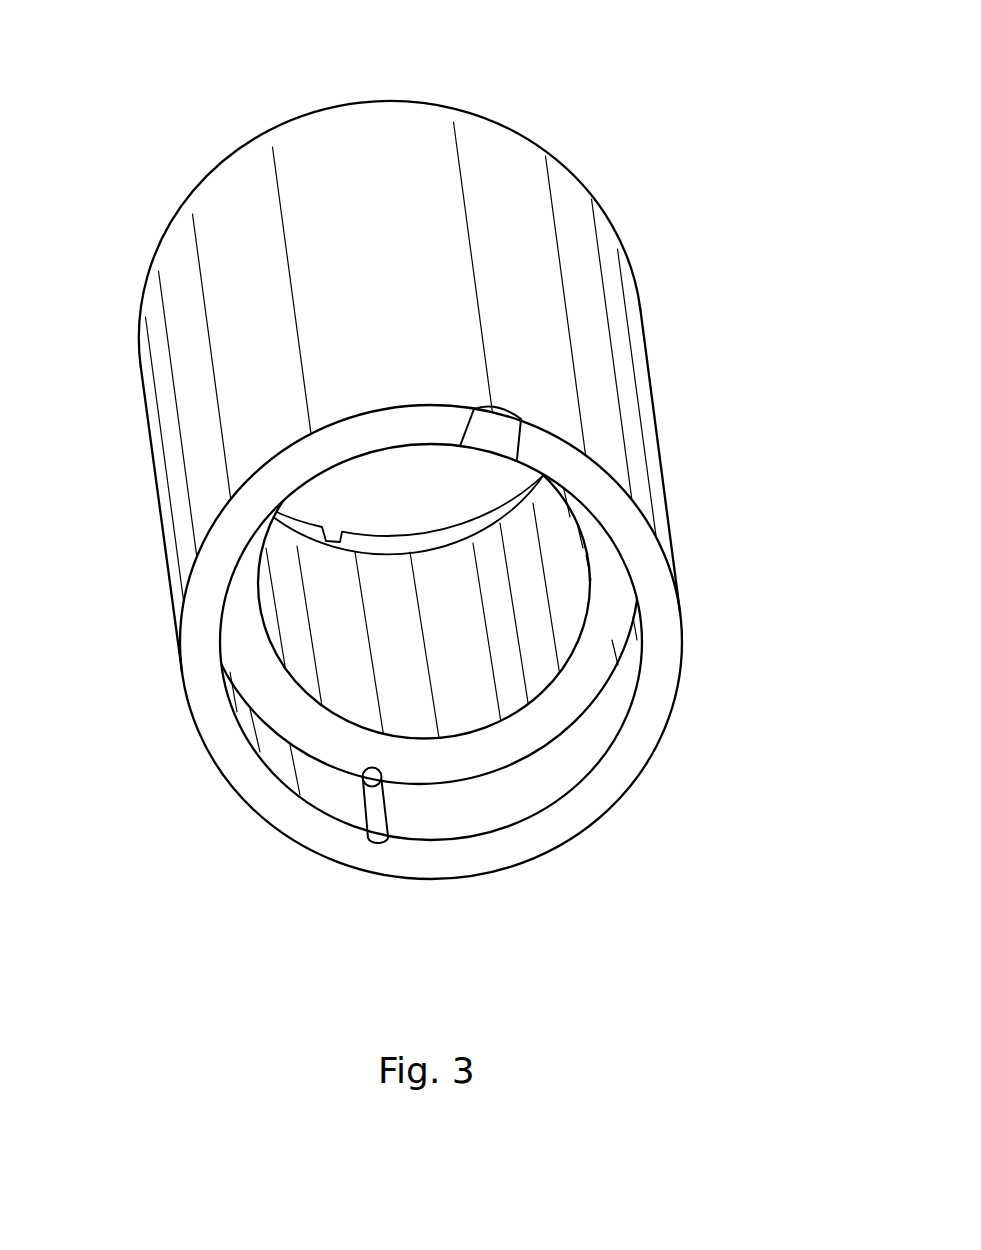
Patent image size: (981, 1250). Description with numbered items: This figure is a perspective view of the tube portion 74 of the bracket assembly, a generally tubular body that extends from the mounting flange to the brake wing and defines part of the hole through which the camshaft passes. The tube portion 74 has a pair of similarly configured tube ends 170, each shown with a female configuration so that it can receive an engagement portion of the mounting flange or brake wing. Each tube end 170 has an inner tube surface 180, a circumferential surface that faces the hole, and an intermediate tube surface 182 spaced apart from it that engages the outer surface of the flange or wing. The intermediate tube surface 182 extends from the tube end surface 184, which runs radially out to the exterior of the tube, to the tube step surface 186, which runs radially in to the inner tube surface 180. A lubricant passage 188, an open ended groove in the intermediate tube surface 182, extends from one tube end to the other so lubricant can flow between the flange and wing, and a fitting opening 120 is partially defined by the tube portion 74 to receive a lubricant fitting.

The tube portion 74 is at (538, 62).
The tube end 170 is at (179, 193).
The tube end surface 184 is at (578, 170).
The tube step surface 186 is at (257, 663).
The intermediate tube surface 182 is at (416, 535).
The inner tube surface 180 is at (420, 660).
The fitting opening 120 is at (497, 437).
The lubricant passage 188 is at (338, 524).